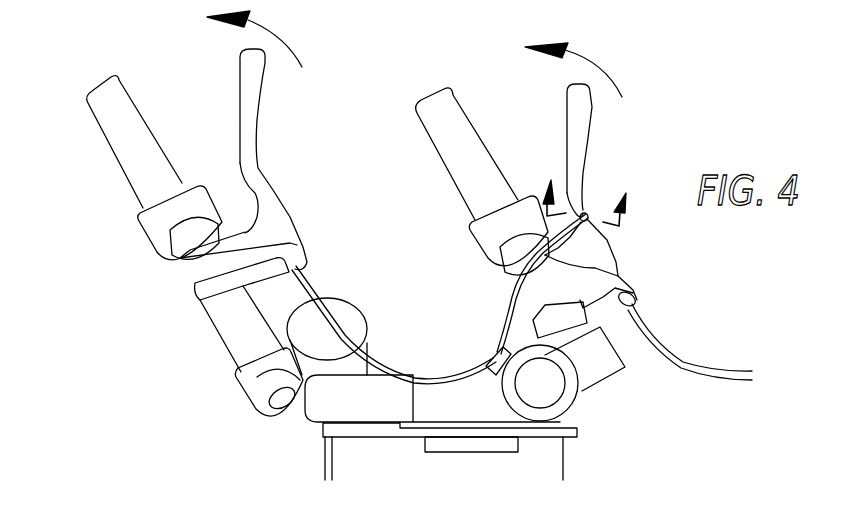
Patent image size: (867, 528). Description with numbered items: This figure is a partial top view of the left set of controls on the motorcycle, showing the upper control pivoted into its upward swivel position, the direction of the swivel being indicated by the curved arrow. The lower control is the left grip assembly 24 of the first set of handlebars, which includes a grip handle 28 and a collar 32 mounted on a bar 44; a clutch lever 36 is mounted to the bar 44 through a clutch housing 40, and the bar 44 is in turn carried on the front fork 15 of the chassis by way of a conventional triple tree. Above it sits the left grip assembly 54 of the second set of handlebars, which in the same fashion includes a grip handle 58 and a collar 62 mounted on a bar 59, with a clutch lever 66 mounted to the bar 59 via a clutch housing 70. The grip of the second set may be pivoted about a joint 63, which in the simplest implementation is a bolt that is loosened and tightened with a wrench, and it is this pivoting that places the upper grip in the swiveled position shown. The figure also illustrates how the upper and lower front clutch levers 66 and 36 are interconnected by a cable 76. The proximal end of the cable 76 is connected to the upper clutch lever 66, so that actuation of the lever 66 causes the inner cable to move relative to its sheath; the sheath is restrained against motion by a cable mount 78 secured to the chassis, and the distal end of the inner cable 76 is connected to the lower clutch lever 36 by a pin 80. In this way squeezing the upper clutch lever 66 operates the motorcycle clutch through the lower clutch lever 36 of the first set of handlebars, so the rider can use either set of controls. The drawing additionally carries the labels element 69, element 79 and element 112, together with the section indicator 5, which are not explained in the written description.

The front fork 15 is at (545, 392).
The left grip assembly 24 is at (455, 200).
The grip handle 28 is at (440, 137).
The collar 32 is at (483, 243).
The clutch lever 36 is at (573, 128).
The clutch housing 40 is at (590, 283).
The bar 44 is at (517, 272).
The left grip assembly 54 is at (100, 145).
The grip handle 58 is at (103, 107).
The bar 59 is at (222, 315).
The collar 62 is at (155, 236).
The joint 63 is at (342, 305).
The clutch lever 66 is at (257, 143).
The lower ring 69 is at (243, 377).
The clutch housing 70 is at (195, 278).
The clutch cable 76 is at (313, 280).
The cable mount 78 is at (500, 357).
The second cable 79 is at (513, 323).
The pin 80 is at (585, 212).
The base plate 112 is at (380, 430).
The section line 5- 5 is at (590, 185).